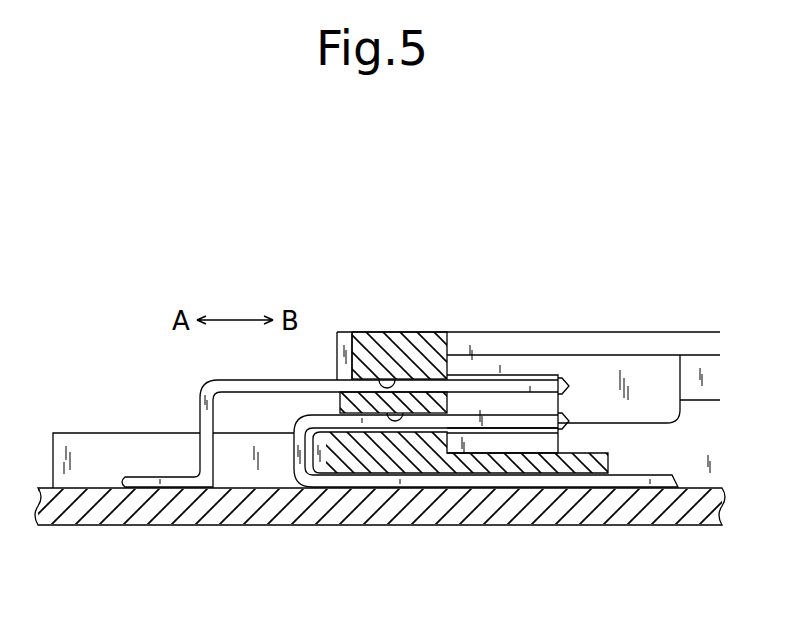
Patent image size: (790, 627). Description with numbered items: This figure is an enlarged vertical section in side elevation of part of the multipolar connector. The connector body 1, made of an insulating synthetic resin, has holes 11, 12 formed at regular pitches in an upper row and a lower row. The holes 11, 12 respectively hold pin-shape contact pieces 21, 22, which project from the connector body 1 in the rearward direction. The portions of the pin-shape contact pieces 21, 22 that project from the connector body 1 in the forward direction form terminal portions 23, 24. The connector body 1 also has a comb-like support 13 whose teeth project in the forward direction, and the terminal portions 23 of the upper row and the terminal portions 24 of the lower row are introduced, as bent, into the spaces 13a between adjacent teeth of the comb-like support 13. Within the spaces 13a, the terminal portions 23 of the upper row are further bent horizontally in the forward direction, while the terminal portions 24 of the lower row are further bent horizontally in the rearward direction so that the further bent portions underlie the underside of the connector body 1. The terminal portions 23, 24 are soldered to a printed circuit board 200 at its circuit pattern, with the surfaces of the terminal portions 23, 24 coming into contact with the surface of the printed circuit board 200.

The connector body 1 is at (515, 352).
The hole 11 is at (388, 378).
The hole 12 is at (410, 413).
The comb-like support 13 is at (72, 433).
The space 13a is at (240, 460).
The pin-shape contact piece 21 is at (477, 385).
The pin-shape contact piece 22 is at (512, 418).
The terminal portion 23 is at (200, 408).
The terminal portion 24 is at (296, 432).
The printed circuit board 200 is at (522, 525).